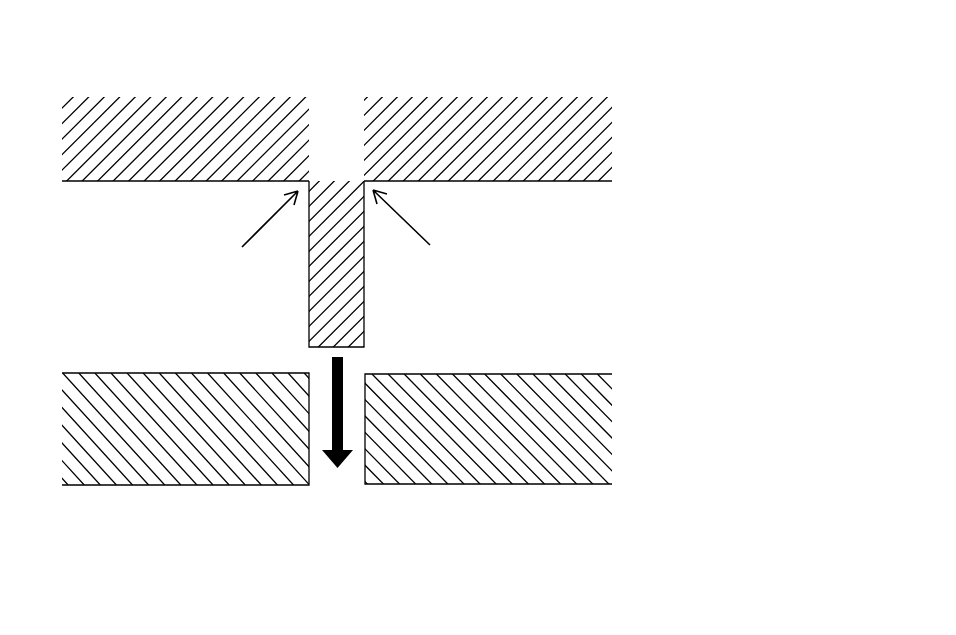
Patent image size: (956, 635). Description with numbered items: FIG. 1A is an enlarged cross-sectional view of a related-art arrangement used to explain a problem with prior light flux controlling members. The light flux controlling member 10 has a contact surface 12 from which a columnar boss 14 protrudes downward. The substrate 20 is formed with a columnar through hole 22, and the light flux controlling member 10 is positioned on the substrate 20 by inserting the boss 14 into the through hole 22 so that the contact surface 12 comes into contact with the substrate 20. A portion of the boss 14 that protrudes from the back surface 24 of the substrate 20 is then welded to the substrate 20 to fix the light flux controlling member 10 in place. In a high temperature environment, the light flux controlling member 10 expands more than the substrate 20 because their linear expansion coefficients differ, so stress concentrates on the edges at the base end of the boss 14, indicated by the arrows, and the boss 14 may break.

The light flux controlling member 10 is at (580, 68).
The contact surface 12 is at (515, 181).
The boss 14 is at (315, 298).
The substrate 20 is at (580, 497).
The through hole 22 is at (365, 360).
The back surface 24 is at (488, 484).